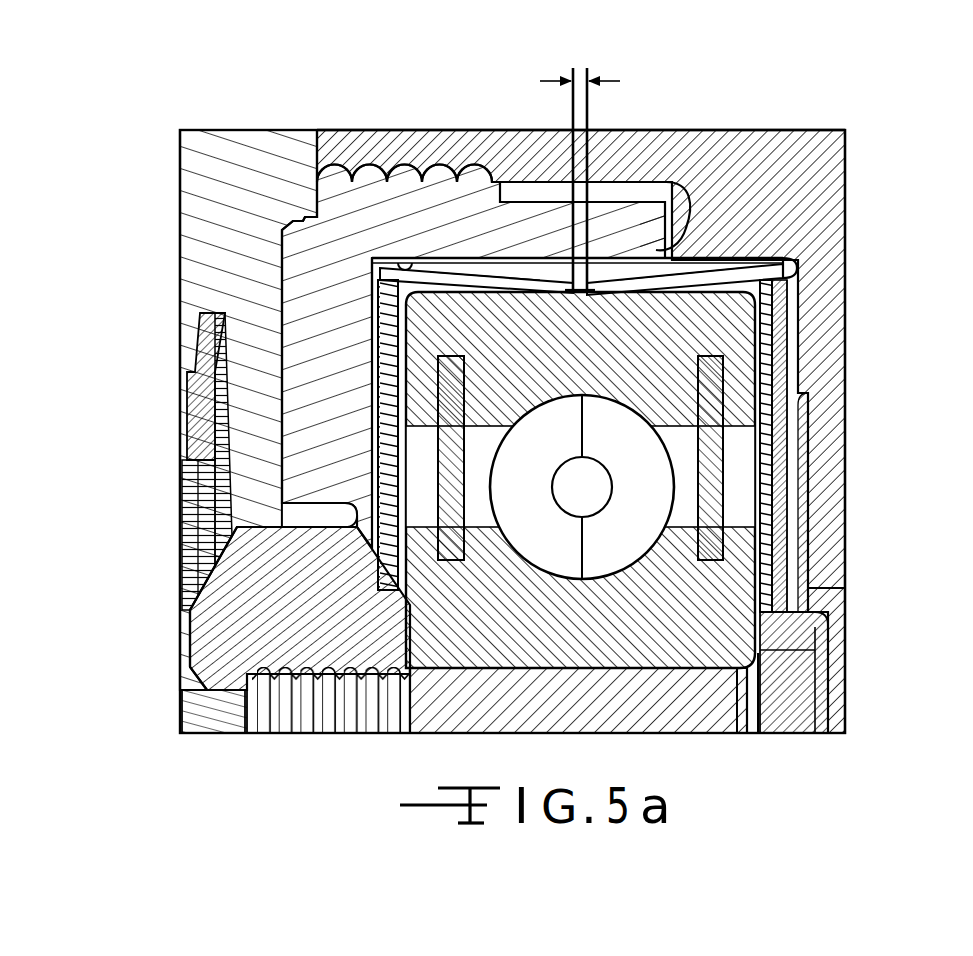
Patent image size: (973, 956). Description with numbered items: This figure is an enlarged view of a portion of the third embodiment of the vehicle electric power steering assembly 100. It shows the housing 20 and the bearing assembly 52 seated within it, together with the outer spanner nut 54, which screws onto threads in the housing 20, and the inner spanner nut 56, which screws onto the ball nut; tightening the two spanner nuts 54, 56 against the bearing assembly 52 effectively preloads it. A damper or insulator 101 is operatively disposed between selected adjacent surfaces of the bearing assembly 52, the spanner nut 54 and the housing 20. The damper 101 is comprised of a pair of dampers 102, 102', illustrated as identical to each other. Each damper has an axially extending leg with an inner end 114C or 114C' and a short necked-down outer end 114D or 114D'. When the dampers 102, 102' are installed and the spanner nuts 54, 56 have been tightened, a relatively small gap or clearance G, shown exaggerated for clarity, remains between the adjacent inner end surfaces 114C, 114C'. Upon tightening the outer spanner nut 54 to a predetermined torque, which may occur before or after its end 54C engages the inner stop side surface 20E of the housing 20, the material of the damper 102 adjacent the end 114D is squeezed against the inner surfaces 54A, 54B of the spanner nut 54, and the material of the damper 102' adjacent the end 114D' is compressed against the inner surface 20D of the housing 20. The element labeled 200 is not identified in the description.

The vehicle electric power steering assembly 100 is at (826, 90).
The housing 20 is at (848, 203).
The inner surface of housing 20D is at (768, 331).
The inner stop side surface 20E is at (656, 248).
The housing cover 200 is at (840, 157).
The damper 101 is at (620, 250).
The damper 102 is at (472, 163).
The damper 102' is at (712, 189).
The gap G is at (581, 68).
The outer spanner nut 54 is at (292, 290).
The inner surface of spanner nut 54A is at (398, 327).
The inner surface of spanner nut 54B is at (396, 258).
The end of spanner nut 54C is at (686, 257).
The inner end 114C is at (476, 301).
The inner end 114C' is at (685, 299).
The outer end 114D is at (437, 256).
The outer end 114D' is at (864, 272).
The inner spanner nut 56 is at (303, 636).
The bearing assembly 52 is at (548, 684).